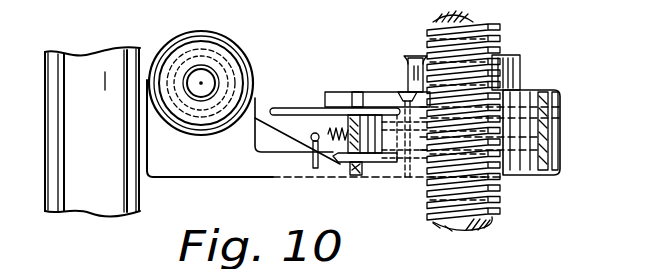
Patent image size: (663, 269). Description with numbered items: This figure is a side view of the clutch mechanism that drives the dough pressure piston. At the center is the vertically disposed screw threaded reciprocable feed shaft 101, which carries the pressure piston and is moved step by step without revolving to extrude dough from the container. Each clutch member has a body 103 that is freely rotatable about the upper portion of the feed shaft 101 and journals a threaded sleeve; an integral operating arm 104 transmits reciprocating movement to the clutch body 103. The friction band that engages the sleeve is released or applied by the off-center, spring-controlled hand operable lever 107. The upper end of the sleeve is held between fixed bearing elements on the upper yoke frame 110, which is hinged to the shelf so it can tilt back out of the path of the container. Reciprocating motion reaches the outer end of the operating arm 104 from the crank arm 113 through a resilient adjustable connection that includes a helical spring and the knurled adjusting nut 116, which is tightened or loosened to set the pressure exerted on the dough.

The screw threaded reciprocable feed shaft 101 is at (498, 34).
The clutch body 103 is at (560, 130).
The operating arm 104 is at (279, 178).
The hand operable lever 107 is at (302, 108).
The upper yoke frame 110 is at (88, 213).
The crank arm 113 is at (480, 246).
The knurled adjusting nut 116 is at (230, 70).